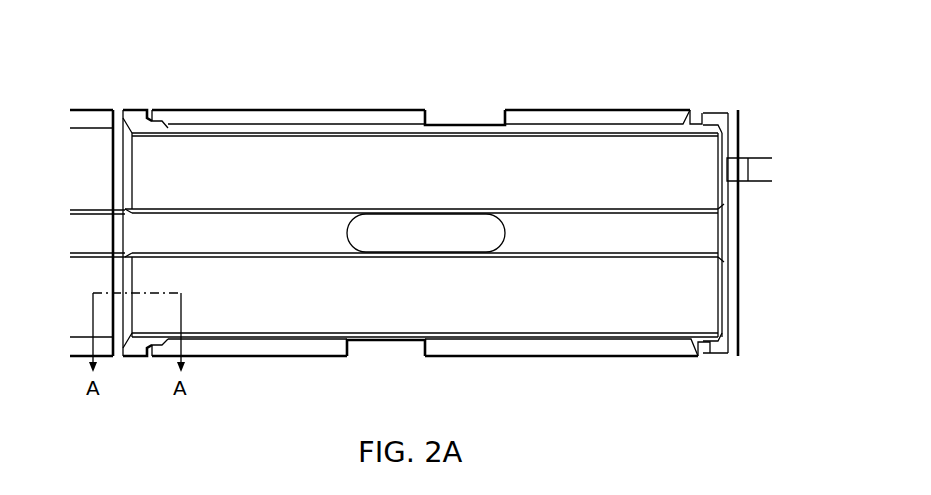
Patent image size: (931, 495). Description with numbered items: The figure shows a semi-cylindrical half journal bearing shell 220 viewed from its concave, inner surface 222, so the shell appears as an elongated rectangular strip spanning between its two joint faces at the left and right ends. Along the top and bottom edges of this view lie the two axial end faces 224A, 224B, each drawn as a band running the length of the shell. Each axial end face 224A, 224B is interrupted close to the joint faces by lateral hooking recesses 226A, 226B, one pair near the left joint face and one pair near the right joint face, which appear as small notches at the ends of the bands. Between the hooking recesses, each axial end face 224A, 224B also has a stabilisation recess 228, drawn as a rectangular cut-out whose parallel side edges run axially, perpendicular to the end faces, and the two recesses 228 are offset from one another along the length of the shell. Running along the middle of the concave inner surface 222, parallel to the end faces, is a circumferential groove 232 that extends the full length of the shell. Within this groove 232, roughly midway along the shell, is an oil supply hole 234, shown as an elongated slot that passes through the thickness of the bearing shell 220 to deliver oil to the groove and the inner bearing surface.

The semi-cylindrical half journal bearing shell 220 is at (618, 75).
The concave inner surface 222 is at (521, 181).
The axial end face 224A is at (245, 110).
The axial end face 224B is at (555, 357).
The lateral hooking recess 226A is at (142, 112).
The lateral hooking recess 226B is at (712, 115).
The stabilisation recess 228 is at (468, 117).
The circumferential groove 232 is at (718, 225).
The oil supply hole 234 is at (383, 225).